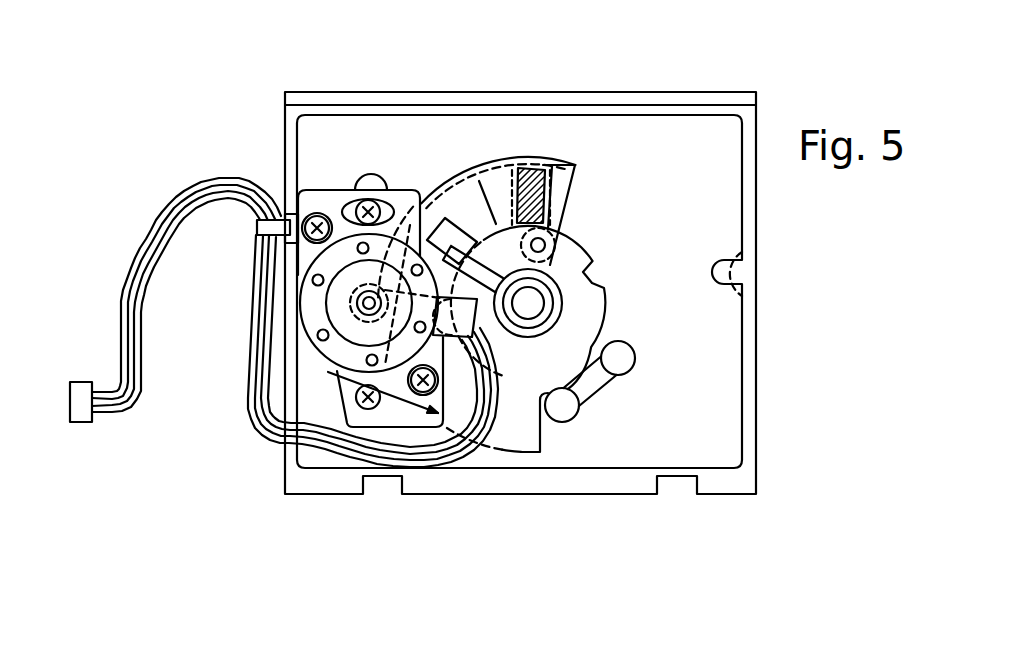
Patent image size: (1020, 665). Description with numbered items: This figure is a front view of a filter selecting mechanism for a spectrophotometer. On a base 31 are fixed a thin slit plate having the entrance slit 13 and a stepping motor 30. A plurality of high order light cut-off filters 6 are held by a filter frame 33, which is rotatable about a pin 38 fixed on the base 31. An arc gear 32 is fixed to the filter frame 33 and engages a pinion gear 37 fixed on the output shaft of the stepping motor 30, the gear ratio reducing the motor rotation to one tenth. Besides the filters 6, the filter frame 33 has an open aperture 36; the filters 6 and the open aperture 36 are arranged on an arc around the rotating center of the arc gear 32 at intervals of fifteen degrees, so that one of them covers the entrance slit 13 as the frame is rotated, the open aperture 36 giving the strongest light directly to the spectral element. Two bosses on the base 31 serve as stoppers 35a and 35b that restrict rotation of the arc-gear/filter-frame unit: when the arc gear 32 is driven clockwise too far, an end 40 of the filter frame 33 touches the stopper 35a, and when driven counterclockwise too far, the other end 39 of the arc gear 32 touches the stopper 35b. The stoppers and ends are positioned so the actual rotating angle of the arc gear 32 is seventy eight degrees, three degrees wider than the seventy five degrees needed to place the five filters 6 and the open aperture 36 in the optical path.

The high order light cut-off filters 6 is at (448, 185).
The entrance slit 13 is at (500, 163).
The stepping motor 30 is at (318, 354).
The base 31 is at (758, 333).
The arc gear 32 is at (512, 456).
The filter frame 33 is at (575, 166).
The stopper 35a is at (634, 342).
The stopper 35b is at (583, 413).
The open aperture 36 is at (547, 165).
The pinion gear 37 is at (358, 322).
The pin 38 is at (522, 335).
The end of the arc-gear/filter-frame unit 39 is at (545, 437).
The end of the arc-gear/filter-frame unit 40 is at (574, 188).